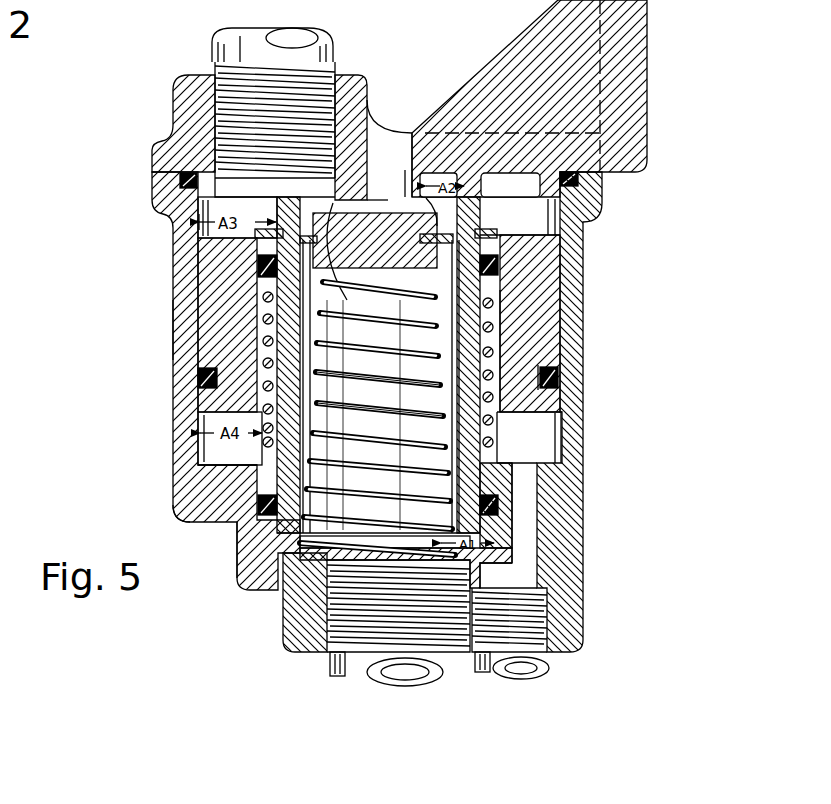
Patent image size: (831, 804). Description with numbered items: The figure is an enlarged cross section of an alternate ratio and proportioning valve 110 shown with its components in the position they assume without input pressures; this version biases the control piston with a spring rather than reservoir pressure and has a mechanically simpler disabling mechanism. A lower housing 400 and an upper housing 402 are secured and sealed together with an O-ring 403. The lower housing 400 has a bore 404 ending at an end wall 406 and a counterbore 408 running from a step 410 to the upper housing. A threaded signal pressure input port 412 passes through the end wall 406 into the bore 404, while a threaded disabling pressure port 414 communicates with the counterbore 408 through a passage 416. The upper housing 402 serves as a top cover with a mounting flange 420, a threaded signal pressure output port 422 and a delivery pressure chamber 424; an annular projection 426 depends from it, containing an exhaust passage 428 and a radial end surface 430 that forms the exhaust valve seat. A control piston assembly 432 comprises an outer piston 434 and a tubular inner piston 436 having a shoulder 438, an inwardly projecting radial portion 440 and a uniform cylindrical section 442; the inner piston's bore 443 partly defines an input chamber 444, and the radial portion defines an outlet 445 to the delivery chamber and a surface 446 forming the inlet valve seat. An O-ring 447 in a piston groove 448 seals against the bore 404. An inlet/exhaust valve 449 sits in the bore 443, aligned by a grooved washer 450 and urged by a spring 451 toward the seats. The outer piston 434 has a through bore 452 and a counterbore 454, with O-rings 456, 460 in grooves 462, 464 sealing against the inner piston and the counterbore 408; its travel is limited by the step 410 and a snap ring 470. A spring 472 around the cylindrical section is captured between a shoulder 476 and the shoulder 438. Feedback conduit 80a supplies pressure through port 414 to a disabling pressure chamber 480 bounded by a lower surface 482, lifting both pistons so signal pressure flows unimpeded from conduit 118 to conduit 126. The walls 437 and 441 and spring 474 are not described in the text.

The upper housing 402 is at (167, 104).
The mounting flange 420 is at (647, 55).
The threaded signal pressure output port 422 is at (222, 64).
The conduit 126 is at (333, 50).
The O-ring 403 is at (183, 175).
The control piston assembly 432 is at (187, 282).
The shoulder 476 is at (200, 300).
The ratio and proportioning valve 110 is at (88, 360).
The spring 472 is at (262, 305).
The outer piston 434 is at (240, 320).
The inwardly projecting radial portion 440 is at (285, 211).
The delivery pressure chamber 424 is at (275, 189).
The lower housing 400 is at (170, 448).
The counterbore 408 is at (255, 455).
The step 410 is at (255, 484).
The shoulder 438 is at (250, 517).
The inner piston 436 is at (496, 478).
The outlet 445 is at (298, 270).
The cartridge wall 437 is at (368, 365).
The cartridge wall 441 is at (378, 365).
The inlet/exhaust valve 449 is at (368, 240).
The surface 446 is at (429, 264).
The grooved washer 450 is at (352, 278).
The exhaust passage 428 is at (383, 162).
The radial end surface 430 is at (388, 200).
The annular projection 426 is at (405, 170).
The snap ring 470 is at (495, 228).
The counterbore 454 is at (520, 340).
The spring 474 is at (491, 368).
The O-ring 456 is at (498, 262).
The piston groove 462 is at (558, 250).
The through bore 452 is at (520, 280).
The piston groove 464 is at (560, 370).
The O-ring 460 is at (555, 383).
The disabling pressure chamber 480 is at (540, 447).
The lower surface 482 is at (560, 420).
The piston groove 448 is at (500, 485).
The O-ring 447 is at (500, 500).
The passage 416 is at (527, 537).
The bore 404 is at (262, 548).
The end wall 406 is at (283, 590).
The threaded signal pressure input port 412 is at (328, 653).
The conduit 118 is at (333, 673).
The threaded disabling pressure port 414 is at (543, 650).
The feedback conduit 80a is at (487, 668).
The uniform cylindrical section 442 is at (280, 343).
The bore 443 is at (300, 418).
The spring 451 is at (344, 392).
The input chamber 444 is at (392, 464).